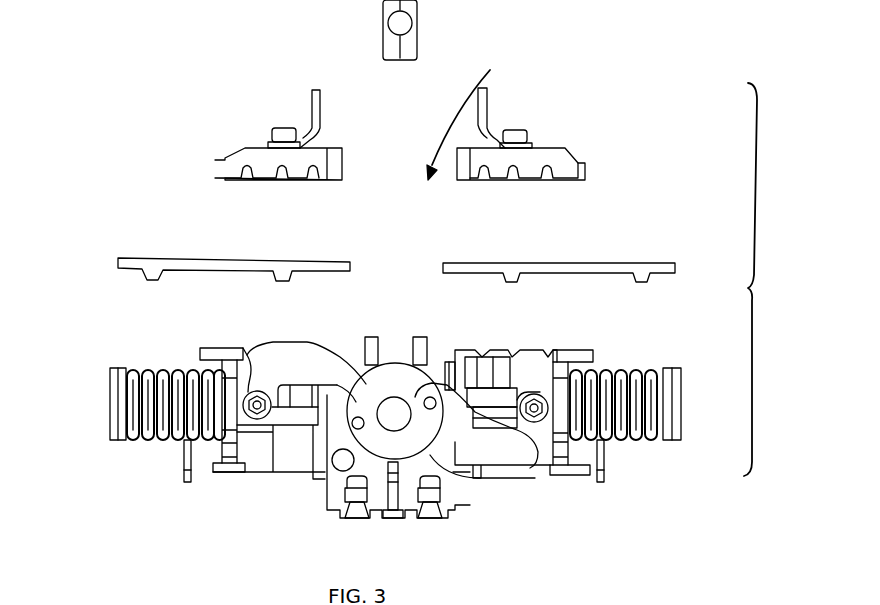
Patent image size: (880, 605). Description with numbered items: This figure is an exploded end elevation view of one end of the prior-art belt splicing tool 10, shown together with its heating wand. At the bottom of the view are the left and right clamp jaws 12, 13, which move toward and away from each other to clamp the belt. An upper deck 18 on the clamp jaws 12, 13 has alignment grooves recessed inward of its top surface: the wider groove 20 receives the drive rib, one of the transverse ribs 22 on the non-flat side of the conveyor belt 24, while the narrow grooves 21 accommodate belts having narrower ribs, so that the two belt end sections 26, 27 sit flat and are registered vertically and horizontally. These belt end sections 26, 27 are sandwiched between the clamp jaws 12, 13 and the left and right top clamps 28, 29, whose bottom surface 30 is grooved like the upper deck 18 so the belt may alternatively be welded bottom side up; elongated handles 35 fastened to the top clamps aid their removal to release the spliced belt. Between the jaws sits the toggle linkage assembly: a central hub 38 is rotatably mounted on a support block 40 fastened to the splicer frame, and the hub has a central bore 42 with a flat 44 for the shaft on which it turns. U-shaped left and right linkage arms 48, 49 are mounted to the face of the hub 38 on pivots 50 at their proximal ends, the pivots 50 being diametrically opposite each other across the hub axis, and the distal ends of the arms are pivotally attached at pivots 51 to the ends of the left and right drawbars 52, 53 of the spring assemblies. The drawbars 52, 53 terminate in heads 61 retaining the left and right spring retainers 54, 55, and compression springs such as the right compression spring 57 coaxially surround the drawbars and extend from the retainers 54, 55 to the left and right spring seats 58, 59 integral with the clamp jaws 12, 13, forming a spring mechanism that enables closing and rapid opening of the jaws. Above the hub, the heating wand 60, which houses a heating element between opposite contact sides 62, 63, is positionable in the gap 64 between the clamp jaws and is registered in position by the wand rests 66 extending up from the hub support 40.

The tool 10 is at (759, 289).
The left clamp jaw 12 is at (210, 348).
The right clamp jaw 13 is at (585, 365).
The upper deck 18 is at (522, 345).
The wider groove 20 is at (512, 350).
The narrow grooves 21 is at (478, 350).
The transverse ribs 22 is at (520, 278).
The conveyor belt 24 is at (585, 263).
The belt end section 26 is at (240, 262).
The belt end section 27 is at (485, 263).
The left top clamp 28 is at (265, 154).
The right top clamp 29 is at (538, 134).
The bottom surface 30 is at (300, 180).
The elongated handles 35 is at (490, 104).
The central hub 38 is at (395, 368).
The support block 40 is at (455, 505).
The central bore 42 is at (387, 412).
The flat 44 is at (540, 470).
The left linkage arm 48 is at (320, 345).
The right linkage arm 49 is at (540, 460).
The pivots 50 is at (358, 423).
The pivots 51 is at (255, 420).
The left drawbar 52 is at (148, 435).
The right drawbar 53 is at (635, 430).
The left spring retainer 54 is at (130, 375).
The right spring retainer 55 is at (681, 435).
The right compression spring 57 is at (640, 372).
The left spring seat 58 is at (235, 463).
The right spring seat 59 is at (560, 470).
The heating wand 60 is at (405, 60).
The heads 61 is at (112, 412).
The contact side 62 is at (383, 12).
The contact side 63 is at (417, 15).
The gap 64 is at (468, 121).
The wand rests 66 is at (360, 345).